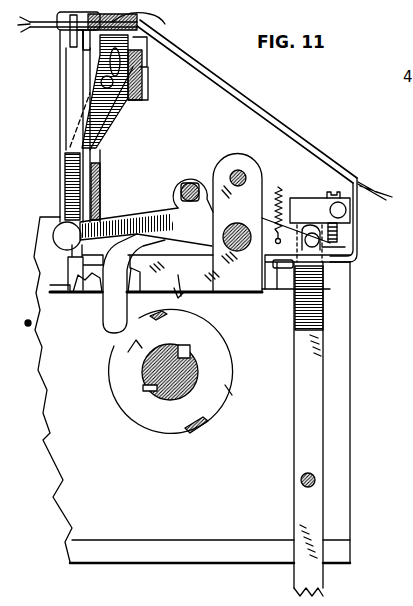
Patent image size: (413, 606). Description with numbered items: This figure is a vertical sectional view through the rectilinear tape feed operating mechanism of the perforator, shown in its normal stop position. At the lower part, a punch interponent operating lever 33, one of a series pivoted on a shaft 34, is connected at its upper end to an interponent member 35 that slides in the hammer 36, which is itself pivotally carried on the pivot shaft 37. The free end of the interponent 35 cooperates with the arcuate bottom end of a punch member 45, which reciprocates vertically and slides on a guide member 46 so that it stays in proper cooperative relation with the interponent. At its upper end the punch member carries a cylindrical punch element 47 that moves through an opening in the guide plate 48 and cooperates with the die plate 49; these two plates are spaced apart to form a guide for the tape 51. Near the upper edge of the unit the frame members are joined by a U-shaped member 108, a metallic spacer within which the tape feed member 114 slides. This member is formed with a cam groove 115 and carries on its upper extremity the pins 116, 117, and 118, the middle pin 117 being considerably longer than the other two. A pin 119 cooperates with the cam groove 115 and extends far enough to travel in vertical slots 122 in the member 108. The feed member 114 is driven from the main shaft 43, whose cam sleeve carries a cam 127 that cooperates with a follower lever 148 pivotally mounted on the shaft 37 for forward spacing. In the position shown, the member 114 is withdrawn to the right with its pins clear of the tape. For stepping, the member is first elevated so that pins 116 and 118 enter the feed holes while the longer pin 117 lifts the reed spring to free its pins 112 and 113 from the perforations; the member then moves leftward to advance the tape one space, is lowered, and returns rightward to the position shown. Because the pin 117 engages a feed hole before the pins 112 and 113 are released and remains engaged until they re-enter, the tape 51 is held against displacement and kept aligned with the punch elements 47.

The punch interponent operating lever 33 is at (305, 509).
The shaft 34 is at (300, 478).
The interponent member 35 is at (83, 272).
The hammer 36 is at (238, 286).
The pivot shaft 37 is at (240, 224).
The main shaft 43 is at (197, 360).
The punch member 45 is at (66, 150).
The guide member 46 is at (102, 182).
The punch element 47 is at (82, 33).
The guide plate 48 is at (72, 37).
The die plate 49 is at (62, 26).
The tape 51 is at (221, 77).
The U-shaped member 108 is at (150, 92).
The pin 112 is at (140, 16).
The pin 113 is at (140, 30).
The tape feed member 114 is at (114, 120).
The cam groove 115 is at (144, 80).
The pin 116 is at (90, 38).
The pin 117 is at (140, 62).
The pin 118 is at (124, 47).
The pin 119 is at (113, 86).
The vertical slot 122 is at (64, 128).
The cam 127 is at (178, 297).
The follower lever 148 is at (107, 315).